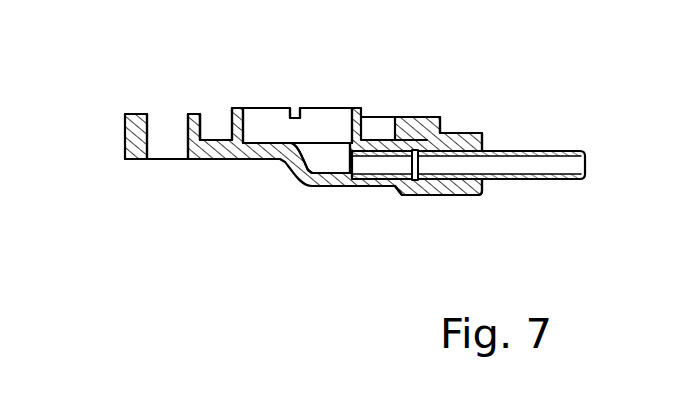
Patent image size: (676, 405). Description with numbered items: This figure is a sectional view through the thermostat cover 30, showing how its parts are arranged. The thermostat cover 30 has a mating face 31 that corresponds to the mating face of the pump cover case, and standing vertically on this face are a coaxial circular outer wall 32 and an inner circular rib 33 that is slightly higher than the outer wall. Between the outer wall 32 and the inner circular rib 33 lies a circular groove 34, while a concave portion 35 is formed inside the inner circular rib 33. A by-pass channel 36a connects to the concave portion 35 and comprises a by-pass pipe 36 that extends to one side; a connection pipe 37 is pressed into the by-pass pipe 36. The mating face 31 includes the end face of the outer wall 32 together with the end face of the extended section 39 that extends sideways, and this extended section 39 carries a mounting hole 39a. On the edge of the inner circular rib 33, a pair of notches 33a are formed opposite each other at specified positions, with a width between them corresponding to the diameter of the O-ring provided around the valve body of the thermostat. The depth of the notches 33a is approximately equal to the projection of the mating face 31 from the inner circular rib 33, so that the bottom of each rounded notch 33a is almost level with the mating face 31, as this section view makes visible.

The thermostat cover 30 is at (283, 214).
The mating face 31 is at (403, 117).
The outer wall 32 is at (192, 113).
The inner circular rib 33 is at (353, 108).
The notches 33a is at (294, 106).
The circular groove 34 is at (217, 114).
The concave portion 35 is at (268, 119).
The by-pass pipe 36 is at (462, 197).
The by-pass channel 36a is at (365, 165).
The connection pipe 37 is at (545, 183).
The extended section 39 is at (124, 137).
The mounting hole 39a is at (163, 152).